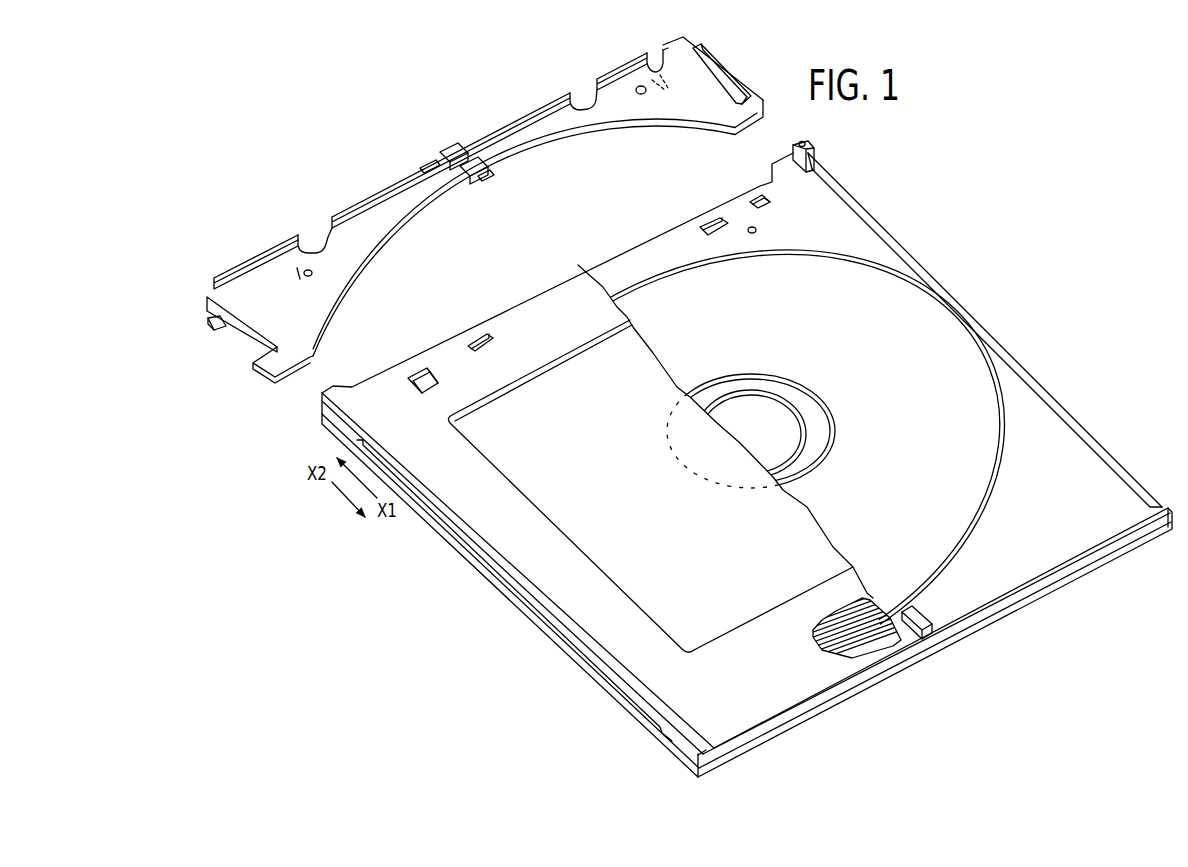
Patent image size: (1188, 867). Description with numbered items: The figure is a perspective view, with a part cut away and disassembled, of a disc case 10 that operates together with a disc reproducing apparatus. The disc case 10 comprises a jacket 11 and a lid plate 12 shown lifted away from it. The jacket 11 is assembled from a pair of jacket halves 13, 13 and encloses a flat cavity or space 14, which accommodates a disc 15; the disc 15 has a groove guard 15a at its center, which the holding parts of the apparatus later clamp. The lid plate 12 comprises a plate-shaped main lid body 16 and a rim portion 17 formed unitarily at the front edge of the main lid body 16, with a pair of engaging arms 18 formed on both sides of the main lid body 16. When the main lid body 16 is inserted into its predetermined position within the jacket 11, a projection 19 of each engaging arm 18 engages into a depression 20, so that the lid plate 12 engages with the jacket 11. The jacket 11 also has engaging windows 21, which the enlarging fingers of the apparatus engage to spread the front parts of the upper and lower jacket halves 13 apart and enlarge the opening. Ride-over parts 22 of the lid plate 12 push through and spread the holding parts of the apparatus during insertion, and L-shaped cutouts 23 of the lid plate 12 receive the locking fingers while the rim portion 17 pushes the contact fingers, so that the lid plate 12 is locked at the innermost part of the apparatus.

The disc case 10 is at (851, 158).
The jacket 11 is at (545, 638).
The lid plate 12 is at (350, 197).
The jacket halves 13 is at (1077, 575).
The flat cavity or space 14 is at (1057, 423).
The disc 15 is at (997, 430).
The groove guard 15a is at (1007, 466).
The main lid body 16 is at (553, 133).
The rim portion 17 is at (517, 121).
The engaging arms 18 is at (242, 343).
The projection 19 is at (210, 330).
The depression 20 is at (823, 172).
The engaging windows 21 is at (477, 342).
The ride-over parts 22 is at (433, 167).
The L-shaped cutouts 23 is at (317, 250).